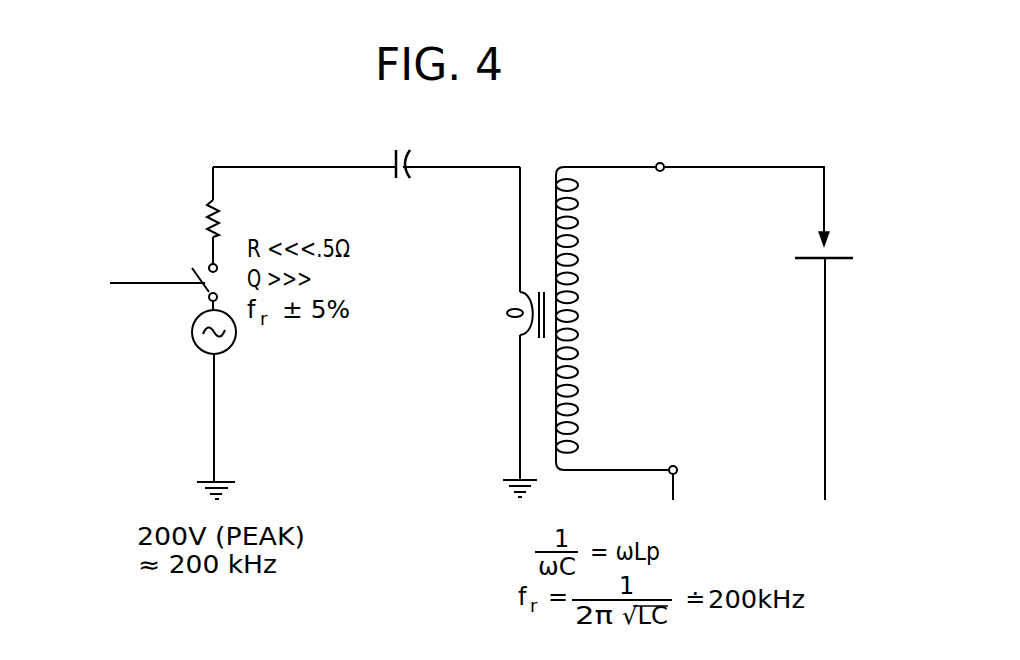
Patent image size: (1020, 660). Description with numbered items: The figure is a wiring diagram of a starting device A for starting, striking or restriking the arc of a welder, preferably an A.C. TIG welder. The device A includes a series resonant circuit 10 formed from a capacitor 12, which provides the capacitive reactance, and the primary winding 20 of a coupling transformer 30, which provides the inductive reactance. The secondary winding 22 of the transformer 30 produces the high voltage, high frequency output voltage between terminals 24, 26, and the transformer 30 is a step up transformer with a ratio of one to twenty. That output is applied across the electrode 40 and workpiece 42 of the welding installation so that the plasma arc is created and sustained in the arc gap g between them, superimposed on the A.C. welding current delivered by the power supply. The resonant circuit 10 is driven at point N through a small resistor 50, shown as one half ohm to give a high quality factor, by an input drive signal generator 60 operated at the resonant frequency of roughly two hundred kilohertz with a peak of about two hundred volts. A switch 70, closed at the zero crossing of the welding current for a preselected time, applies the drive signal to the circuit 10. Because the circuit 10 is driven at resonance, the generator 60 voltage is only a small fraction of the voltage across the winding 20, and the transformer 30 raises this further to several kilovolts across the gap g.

The series resonant circuit 10 is at (361, 148).
The capacitor 12 is at (404, 152).
The primary winding 20 is at (522, 318).
The secondary winding 22 is at (578, 392).
The terminal 24 is at (677, 466).
The terminal 26 is at (664, 163).
The coupling transformer 30 is at (591, 148).
The electrode 40 is at (832, 232).
The workpiece 42 is at (813, 262).
The resistor 50 is at (207, 222).
The input drive signal generator 60 is at (228, 347).
The switch 70 is at (208, 293).
The starting device A is at (196, 159).
The point N is at (210, 164).
The arc gap g is at (827, 252).